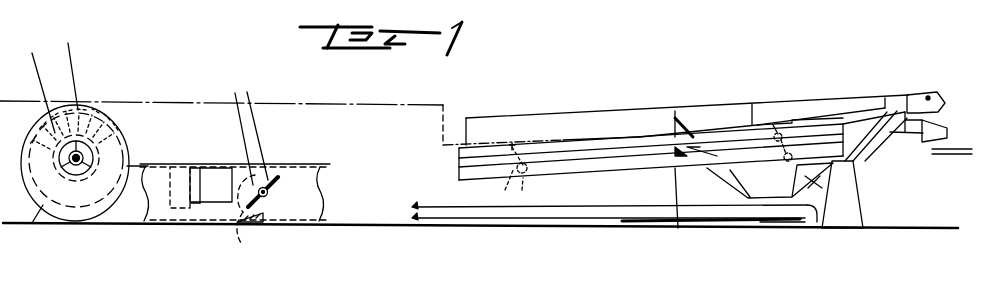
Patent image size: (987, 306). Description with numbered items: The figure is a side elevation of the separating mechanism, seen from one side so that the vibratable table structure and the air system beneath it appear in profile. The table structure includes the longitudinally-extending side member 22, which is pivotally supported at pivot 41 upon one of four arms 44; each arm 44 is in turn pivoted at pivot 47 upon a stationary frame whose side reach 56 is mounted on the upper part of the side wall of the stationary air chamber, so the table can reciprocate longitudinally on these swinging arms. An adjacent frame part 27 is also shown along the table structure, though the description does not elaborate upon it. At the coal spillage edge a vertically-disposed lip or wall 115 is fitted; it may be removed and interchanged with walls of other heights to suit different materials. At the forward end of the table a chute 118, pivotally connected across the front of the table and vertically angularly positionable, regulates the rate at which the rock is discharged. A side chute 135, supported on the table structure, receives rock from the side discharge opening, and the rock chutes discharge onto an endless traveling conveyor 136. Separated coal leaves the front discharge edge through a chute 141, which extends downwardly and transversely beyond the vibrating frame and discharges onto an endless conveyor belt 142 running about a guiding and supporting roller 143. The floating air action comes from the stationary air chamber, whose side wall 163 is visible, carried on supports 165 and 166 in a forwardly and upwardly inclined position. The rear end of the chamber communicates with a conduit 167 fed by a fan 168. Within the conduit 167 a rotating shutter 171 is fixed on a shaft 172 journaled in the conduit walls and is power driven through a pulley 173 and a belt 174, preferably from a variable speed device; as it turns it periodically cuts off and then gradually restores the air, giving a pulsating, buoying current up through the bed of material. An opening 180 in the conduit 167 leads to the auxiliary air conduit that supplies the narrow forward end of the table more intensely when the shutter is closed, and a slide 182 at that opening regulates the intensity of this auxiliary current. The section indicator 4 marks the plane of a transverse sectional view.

The section line 4- 4 is at (12, 100).
The side member 22 is at (562, 147).
The conveyor rail 27 is at (612, 100).
The pivot 41 is at (512, 147).
The arm 44 is at (505, 188).
The pivot 47 is at (522, 190).
The side reach 56 is at (563, 174).
The lip or wall 115 is at (805, 122).
The chute 118 is at (930, 95).
The chute 135 is at (928, 124).
The endless traveling conveyor 136 is at (953, 154).
The chute 141 is at (813, 177).
The endless conveyor belt 142 is at (562, 212).
The roller 143 is at (817, 217).
The side wall 163 is at (663, 200).
The support 165 is at (773, 222).
The support 166 is at (623, 222).
The conduit 167 is at (392, 192).
The fan 168 is at (119, 121).
The rotating shutter 171 is at (280, 178).
The shaft 172 is at (268, 198).
The pulley 173 is at (257, 235).
The belt 174 is at (258, 128).
The opening 180 is at (218, 183).
The slide 182 is at (203, 185).